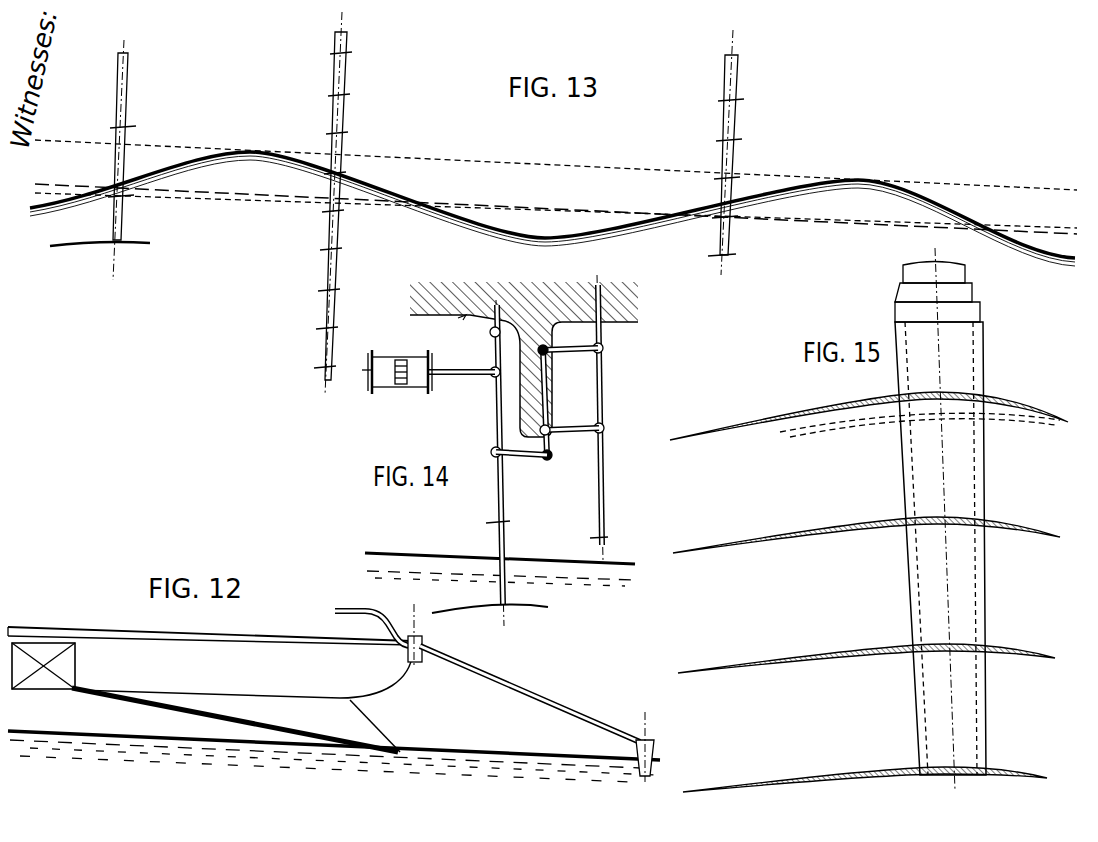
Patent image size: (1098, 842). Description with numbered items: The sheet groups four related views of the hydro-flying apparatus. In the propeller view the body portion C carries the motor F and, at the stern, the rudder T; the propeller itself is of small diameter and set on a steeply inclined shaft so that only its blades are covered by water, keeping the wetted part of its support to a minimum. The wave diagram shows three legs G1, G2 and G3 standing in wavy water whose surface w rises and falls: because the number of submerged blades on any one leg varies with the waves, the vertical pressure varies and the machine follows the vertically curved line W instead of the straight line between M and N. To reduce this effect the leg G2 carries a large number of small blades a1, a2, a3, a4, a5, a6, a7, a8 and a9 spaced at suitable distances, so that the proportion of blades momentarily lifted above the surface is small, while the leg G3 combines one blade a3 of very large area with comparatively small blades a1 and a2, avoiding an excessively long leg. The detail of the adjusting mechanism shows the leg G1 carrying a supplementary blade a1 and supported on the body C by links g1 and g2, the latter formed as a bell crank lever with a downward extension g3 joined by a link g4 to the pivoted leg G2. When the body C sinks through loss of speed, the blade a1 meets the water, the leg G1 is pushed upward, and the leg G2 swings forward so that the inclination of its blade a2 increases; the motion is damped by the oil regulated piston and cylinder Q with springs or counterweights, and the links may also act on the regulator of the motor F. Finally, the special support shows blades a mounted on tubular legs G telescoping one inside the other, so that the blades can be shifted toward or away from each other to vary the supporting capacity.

In FIG. 13, the leg G1 is at (748, 152).
In FIG. 14, the leg G1 is at (618, 417).
In FIG. 13, the leg G2 is at (356, 203).
In FIG. 14, the leg G2 is at (489, 463).
In FIG. 13, the leg G3 is at (111, 160).
In FIG. 15, the tubular legs G is at (940, 519).
In FIG. 15, the blades a is at (869, 589).
In FIG. 13, the supplementary blade a1 is at (441, 93).
In FIG. 14, the supplementary blade a1 is at (597, 538).
In FIG. 13, the blade a2 is at (440, 148).
In FIG. 14, the blade a2 is at (506, 573).
In FIG. 13, the large blade a3 is at (469, 191).
In FIG. 13, the fourth graduation mark a4 is at (547, 201).
In FIG. 13, the fifth graduation mark a5 is at (545, 241).
In FIG. 13, the sixth graduation mark a6 is at (347, 255).
In FIG. 13, the seventh graduation mark a7 is at (345, 292).
In FIG. 13, the eighth graduation mark a8 is at (343, 330).
In FIG. 13, the ninth graduation mark a9 is at (340, 369).
In FIG. 13, the straight line end point M is at (549, 196).
In FIG. 13, the straight line end point N is at (1086, 222).
In FIG. 13, the vertically curved line W is at (549, 205).
In FIG. 13, the wave surface w is at (552, 209).
In FIG. 14, the body portion C is at (524, 347).
In FIG. 14, the oil regulated piston and cylinder Q is at (428, 358).
In FIG. 14, the link g1 is at (568, 400).
In FIG. 14, the link g2 is at (575, 433).
In FIG. 14, the downward extension g3 is at (550, 458).
In FIG. 14, the link g4 is at (528, 458).
In FIG. 12, the motor F is at (43, 666).
In FIG. 12, the rudder T is at (537, 714).